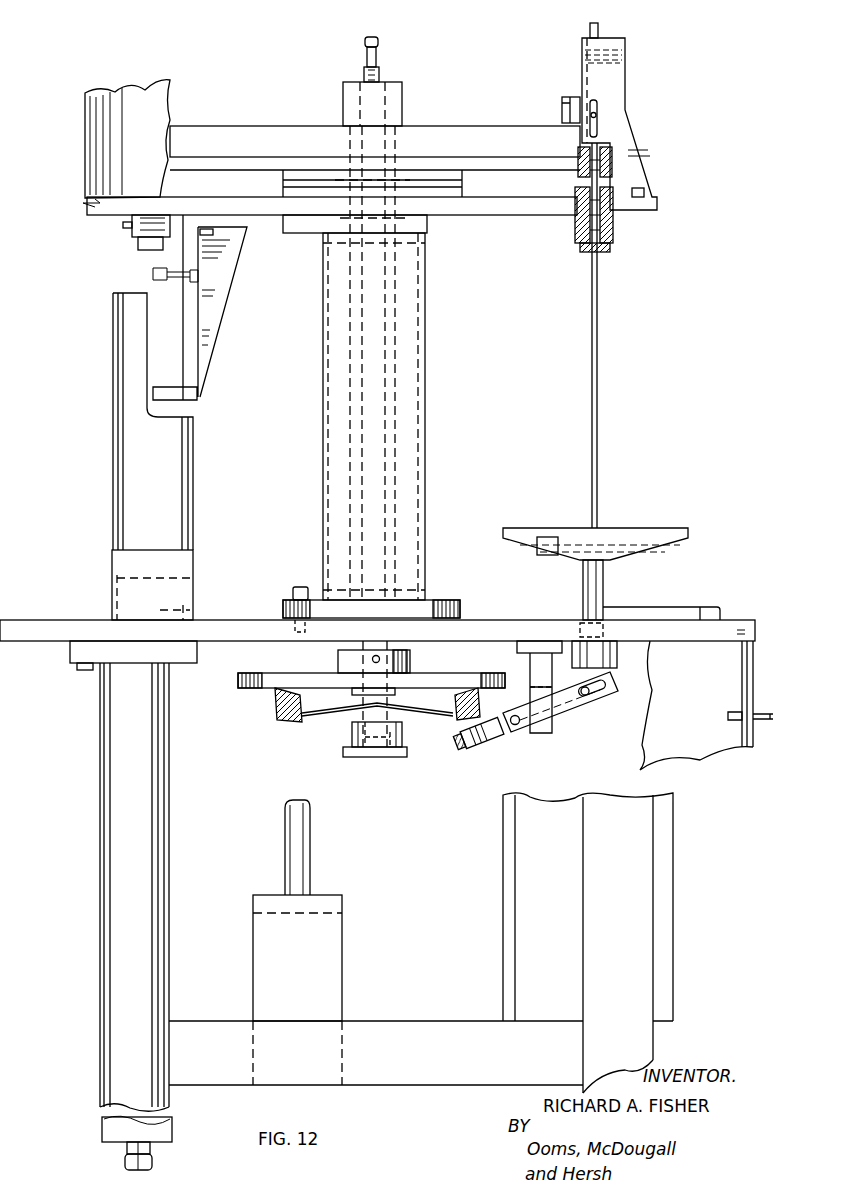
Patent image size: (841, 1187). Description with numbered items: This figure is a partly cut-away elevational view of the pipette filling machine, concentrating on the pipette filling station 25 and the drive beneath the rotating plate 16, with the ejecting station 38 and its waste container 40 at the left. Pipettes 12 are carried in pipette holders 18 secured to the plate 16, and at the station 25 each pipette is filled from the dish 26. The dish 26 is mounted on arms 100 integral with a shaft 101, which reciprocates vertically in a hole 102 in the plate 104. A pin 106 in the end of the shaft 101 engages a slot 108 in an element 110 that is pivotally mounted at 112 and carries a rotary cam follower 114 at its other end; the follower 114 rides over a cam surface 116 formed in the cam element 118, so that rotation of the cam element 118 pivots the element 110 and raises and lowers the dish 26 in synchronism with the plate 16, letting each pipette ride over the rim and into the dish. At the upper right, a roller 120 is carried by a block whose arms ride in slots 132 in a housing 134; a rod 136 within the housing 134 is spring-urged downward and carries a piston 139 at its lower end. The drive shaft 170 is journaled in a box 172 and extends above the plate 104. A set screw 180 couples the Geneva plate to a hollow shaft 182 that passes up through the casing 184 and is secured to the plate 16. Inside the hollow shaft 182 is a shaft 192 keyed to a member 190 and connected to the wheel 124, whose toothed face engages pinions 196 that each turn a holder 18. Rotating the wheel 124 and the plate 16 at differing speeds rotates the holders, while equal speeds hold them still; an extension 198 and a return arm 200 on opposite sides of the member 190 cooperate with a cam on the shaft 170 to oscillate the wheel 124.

The pipette 12 is at (592, 405).
The plate 16 is at (507, 207).
The pipette holder 18 is at (140, 245).
The pipette filling station 25 is at (608, 134).
The dish 26 is at (575, 528).
The ejecting station 38 is at (312, 692).
The waste container 40 is at (130, 458).
The arms 100 is at (548, 550).
The shaft 101 is at (590, 580).
The hole 102 is at (582, 635).
The plate 104 is at (503, 628).
The pin 106 is at (596, 712).
The slot 108 is at (616, 698).
The element 110 is at (570, 720).
The pivot 112 is at (516, 726).
The rotary cam follower 114 is at (480, 752).
The cam surface 116 is at (296, 725).
The cam element 118 is at (330, 700).
The roller 120 is at (572, 97).
The wheel 124 is at (212, 130).
The slots 132 is at (598, 112).
The housing 134 is at (612, 100).
The rod 136 is at (590, 30).
The piston 139 is at (613, 212).
The shaft 170 is at (298, 853).
The box 172 is at (270, 980).
The set screw 180 is at (372, 659).
The hollow shaft 182 is at (352, 312).
The casing 184 is at (320, 538).
The member 190 is at (396, 730).
The shaft 192 is at (343, 95).
The pinions 196 is at (578, 170).
The extension 198 is at (352, 757).
The return arm 200 is at (370, 745).